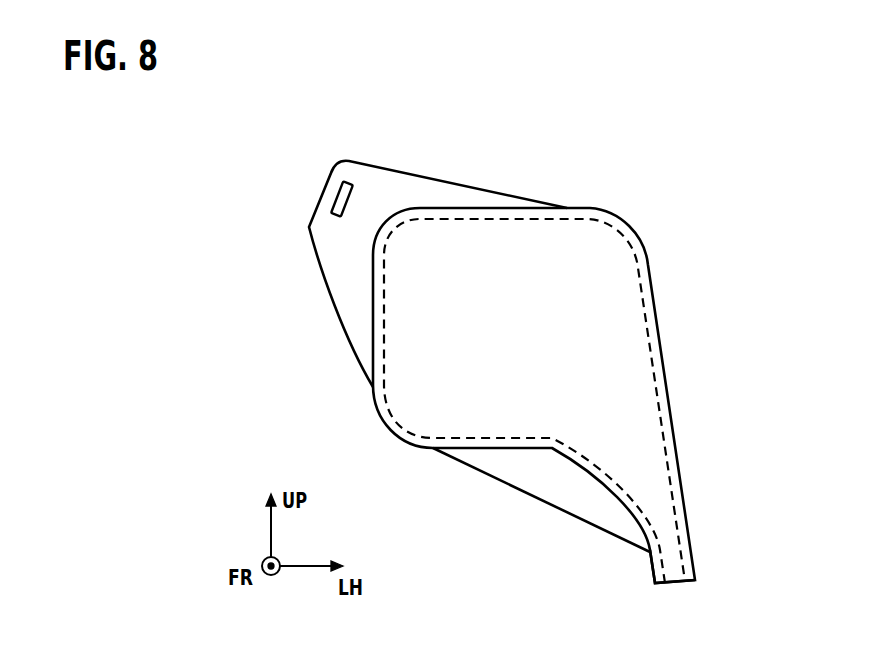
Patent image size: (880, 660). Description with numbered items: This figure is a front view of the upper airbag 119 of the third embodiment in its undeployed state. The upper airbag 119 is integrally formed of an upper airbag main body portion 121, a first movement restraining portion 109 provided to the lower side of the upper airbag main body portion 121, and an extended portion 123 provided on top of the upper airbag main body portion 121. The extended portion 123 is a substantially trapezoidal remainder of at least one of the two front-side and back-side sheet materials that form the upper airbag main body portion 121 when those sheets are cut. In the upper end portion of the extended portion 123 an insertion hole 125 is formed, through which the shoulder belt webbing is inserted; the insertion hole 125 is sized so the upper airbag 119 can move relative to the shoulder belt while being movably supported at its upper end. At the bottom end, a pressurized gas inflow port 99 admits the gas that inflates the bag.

The upper airbag 119 is at (337, 134).
The upper airbag main body portion 121 is at (630, 323).
The extended portion 123 is at (348, 267).
The insertion hole 125 is at (336, 191).
The first movement restraining portion 109 is at (530, 487).
The pressurized gas inflow port 99 is at (675, 581).